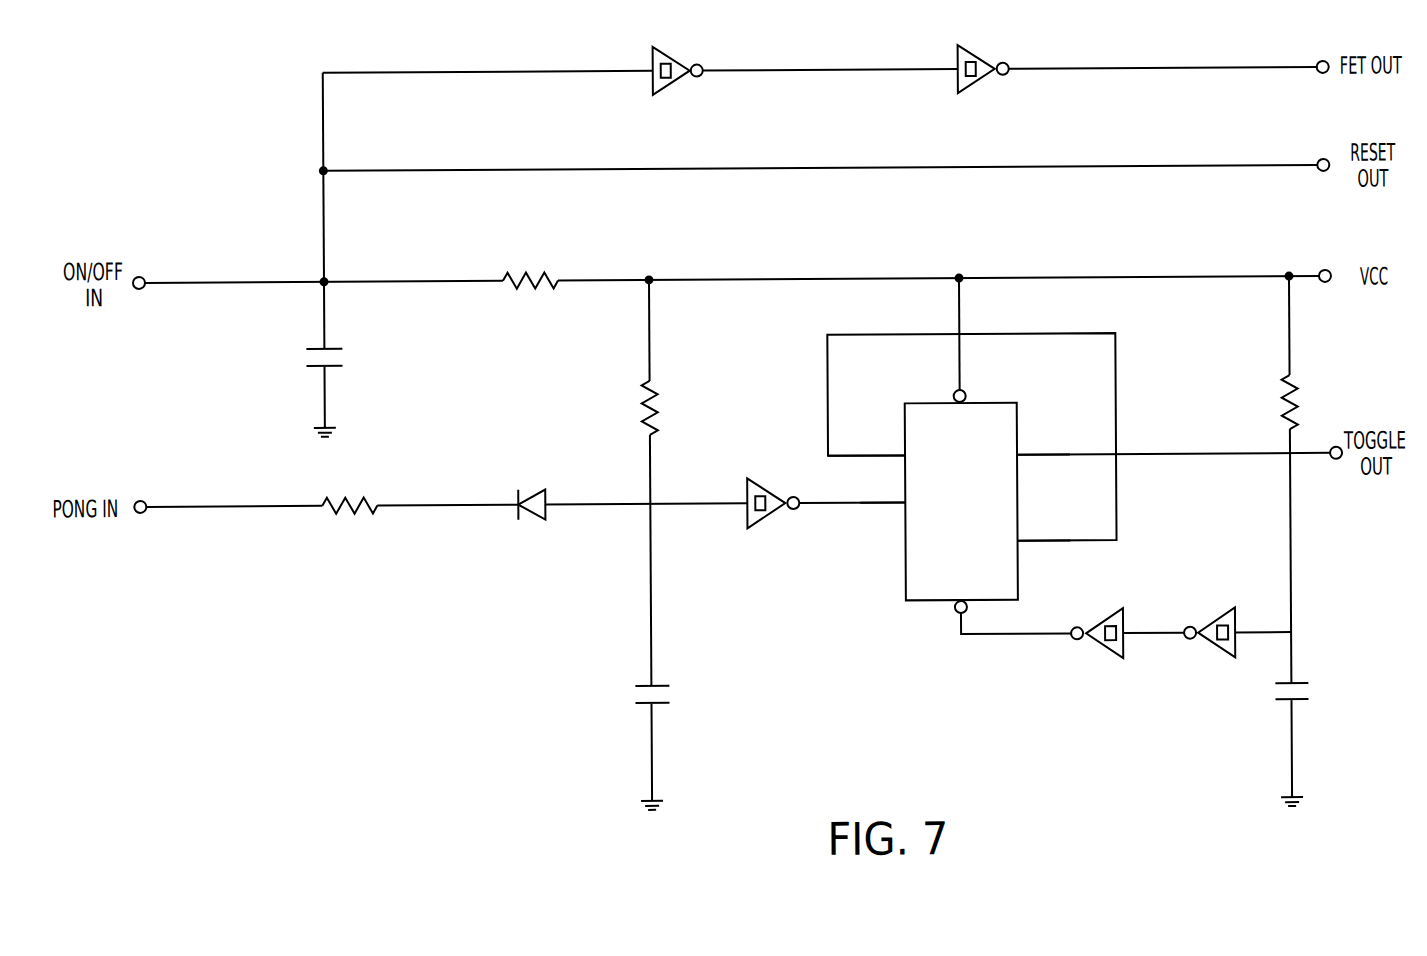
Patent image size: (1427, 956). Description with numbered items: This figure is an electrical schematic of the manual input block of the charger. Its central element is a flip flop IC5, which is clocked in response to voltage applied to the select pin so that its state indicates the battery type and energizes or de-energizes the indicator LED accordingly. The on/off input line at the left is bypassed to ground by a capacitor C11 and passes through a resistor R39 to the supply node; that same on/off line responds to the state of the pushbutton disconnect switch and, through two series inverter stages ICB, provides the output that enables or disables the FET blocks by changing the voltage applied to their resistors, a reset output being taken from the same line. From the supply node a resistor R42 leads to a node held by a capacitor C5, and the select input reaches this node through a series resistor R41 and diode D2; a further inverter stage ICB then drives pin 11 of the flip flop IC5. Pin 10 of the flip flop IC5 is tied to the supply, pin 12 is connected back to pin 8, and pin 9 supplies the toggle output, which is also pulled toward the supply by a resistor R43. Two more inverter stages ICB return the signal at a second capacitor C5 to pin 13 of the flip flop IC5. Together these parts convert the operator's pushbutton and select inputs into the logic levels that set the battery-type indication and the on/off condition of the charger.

The capacitor 0.1 microfarad C11 is at (349, 359).
The resistor 83.4K R39 is at (530, 309).
The resistor 392K R42 is at (676, 408).
The capacitor 0.1 microfarad C5 is at (1001, 738).
The resistor 9.53K R41 is at (349, 537).
The diode 1N4148 D2 is at (532, 532).
The Schmitt trigger inverter ICB is at (944, 374).
The flip flop IC5 is at (966, 468).
The flip-flop preset pin 10 is at (949, 391).
The flip-flop D input pin 12 is at (866, 441).
The flip-flop clock pin 11 is at (882, 488).
The flip-flop Q output pin 9 is at (1043, 441).
The flip-flop Q-bar output pin 8 is at (1043, 528).
The flip-flop clear pin 13 is at (973, 616).
The resistor 1.0M R43 is at (1318, 403).